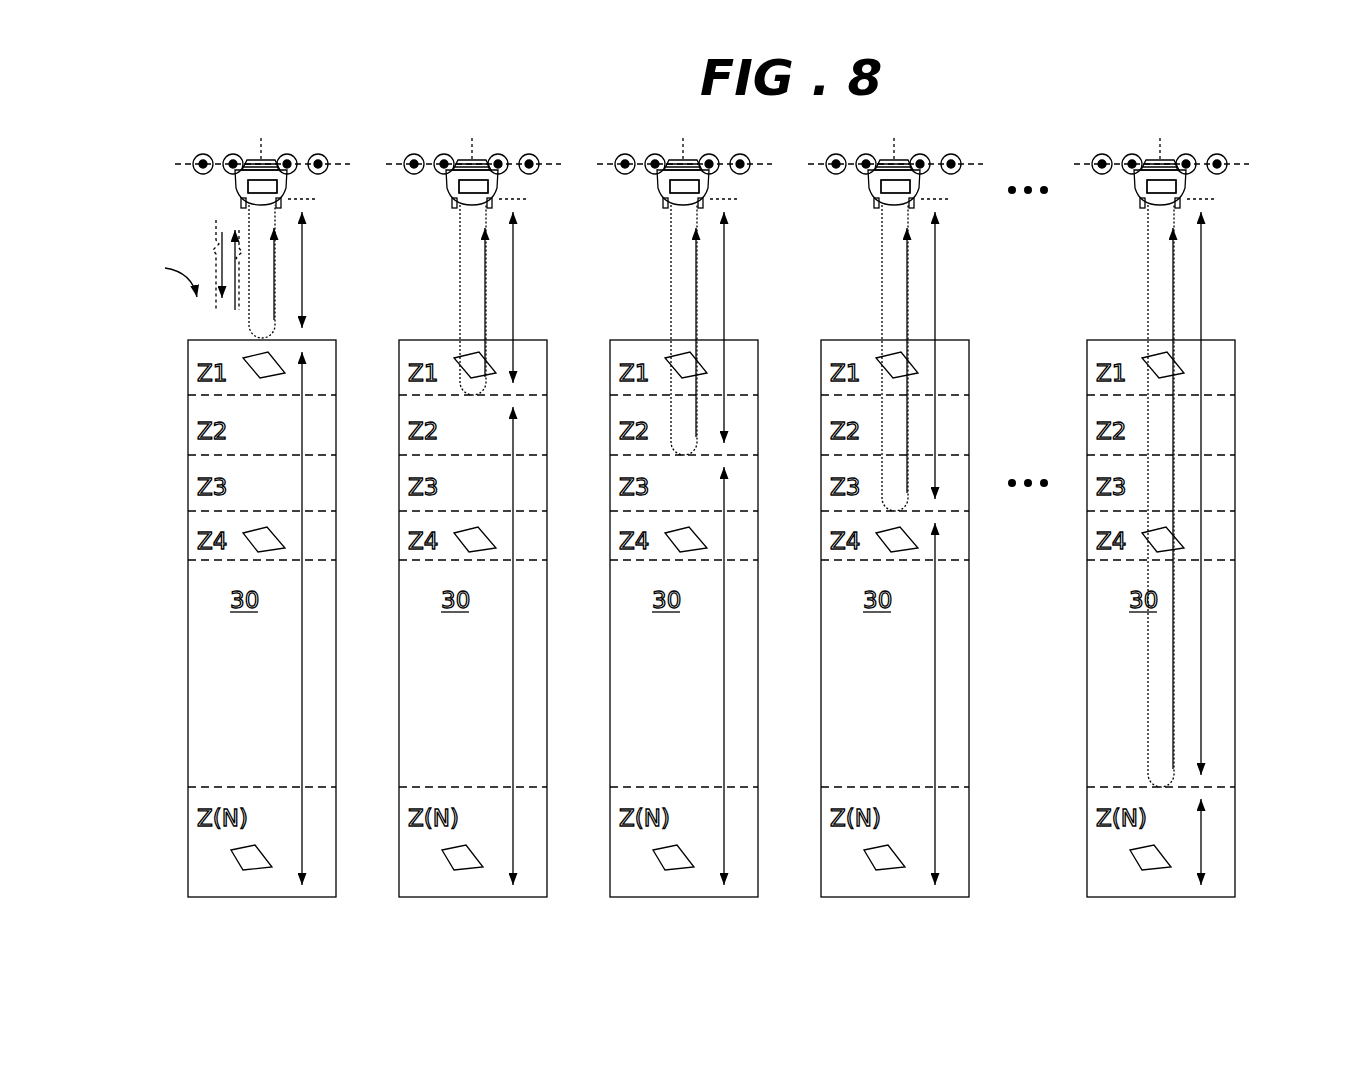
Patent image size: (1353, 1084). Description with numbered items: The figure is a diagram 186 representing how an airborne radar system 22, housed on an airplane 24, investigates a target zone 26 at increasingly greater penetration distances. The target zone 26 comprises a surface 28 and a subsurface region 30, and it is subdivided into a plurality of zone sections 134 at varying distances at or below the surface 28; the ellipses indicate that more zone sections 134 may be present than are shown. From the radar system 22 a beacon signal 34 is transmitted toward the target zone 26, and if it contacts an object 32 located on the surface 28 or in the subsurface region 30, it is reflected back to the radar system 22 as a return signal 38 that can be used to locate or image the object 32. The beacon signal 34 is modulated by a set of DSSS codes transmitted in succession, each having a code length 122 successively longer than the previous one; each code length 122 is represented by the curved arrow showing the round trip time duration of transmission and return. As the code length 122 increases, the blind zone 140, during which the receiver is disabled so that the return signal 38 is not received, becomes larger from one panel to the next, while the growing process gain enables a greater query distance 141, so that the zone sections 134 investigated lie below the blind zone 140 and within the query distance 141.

The airplane 24 is at (1091, 165).
The airborne radar system 22 is at (1237, 195).
The code length 122 is at (1268, 405).
The blind zone 140 is at (1203, 270).
The query distance 141 is at (1250, 825).
The surface 28 is at (1090, 340).
The zone sections 134 is at (193, 818).
The subsurface region 30 is at (677, 595).
The object 32 is at (1163, 363).
The return signal 38 is at (235, 226).
The beacon signal 34 is at (217, 240).
The target zone 26 is at (167, 278).
The diagram 186 is at (1056, 864).